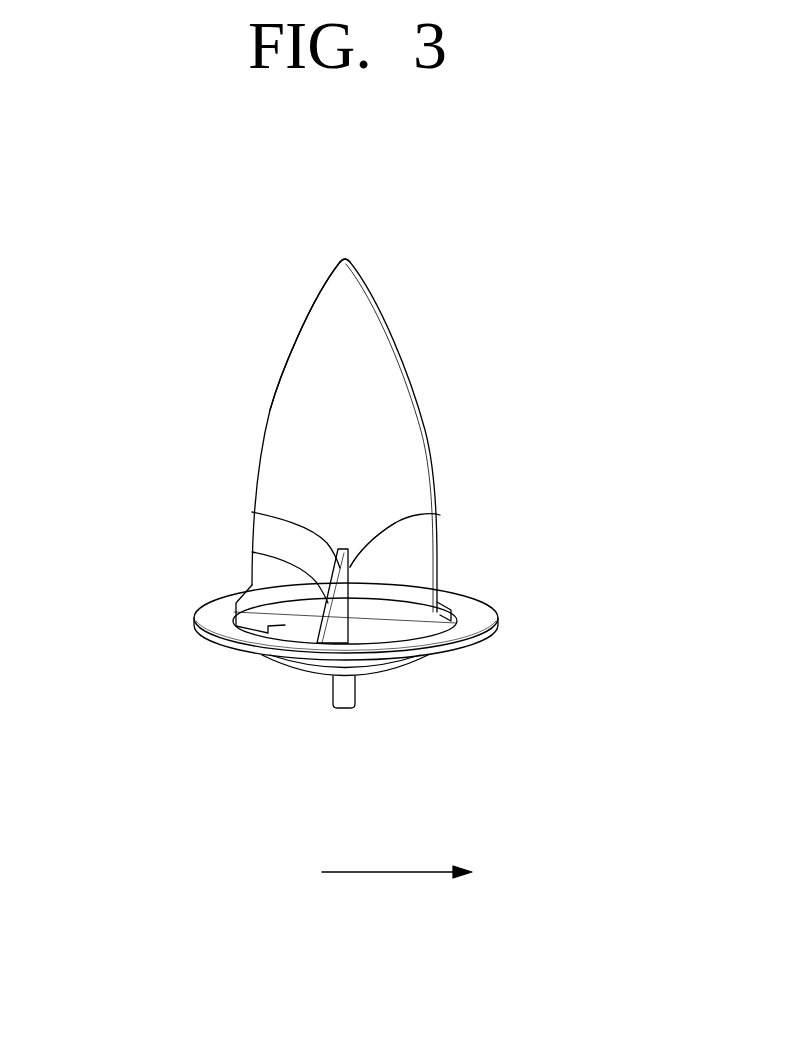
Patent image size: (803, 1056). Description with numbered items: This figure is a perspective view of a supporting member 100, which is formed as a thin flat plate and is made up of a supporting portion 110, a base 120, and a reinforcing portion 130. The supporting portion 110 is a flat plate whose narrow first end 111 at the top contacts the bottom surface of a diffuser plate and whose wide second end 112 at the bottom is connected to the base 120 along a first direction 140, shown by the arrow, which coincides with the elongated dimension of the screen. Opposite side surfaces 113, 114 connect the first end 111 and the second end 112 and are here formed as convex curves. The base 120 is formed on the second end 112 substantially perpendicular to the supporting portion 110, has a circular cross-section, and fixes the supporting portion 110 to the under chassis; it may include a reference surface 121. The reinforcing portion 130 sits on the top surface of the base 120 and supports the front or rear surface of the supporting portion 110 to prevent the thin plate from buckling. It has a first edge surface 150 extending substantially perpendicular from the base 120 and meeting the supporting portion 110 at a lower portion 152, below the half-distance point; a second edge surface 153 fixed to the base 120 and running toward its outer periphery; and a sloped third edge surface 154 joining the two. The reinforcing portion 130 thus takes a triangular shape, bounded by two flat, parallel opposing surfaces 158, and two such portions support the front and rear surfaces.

The supporting member 100 is at (438, 275).
The supporting portion 110 is at (413, 446).
The first end 111 is at (345, 257).
The second end 112 is at (246, 591).
The side surface 113 is at (273, 386).
The side surface 114 is at (417, 391).
The base 120 is at (478, 625).
The reference surface 121 is at (315, 669).
The reinforcing portion 130 is at (318, 620).
The first direction 140 is at (398, 872).
The first edge surface 150 is at (440, 514).
The lower portion 152 is at (397, 587).
The second edge surface 153 is at (343, 603).
The third edge surface 154 is at (250, 508).
The opposing surfaces 158 is at (252, 552).